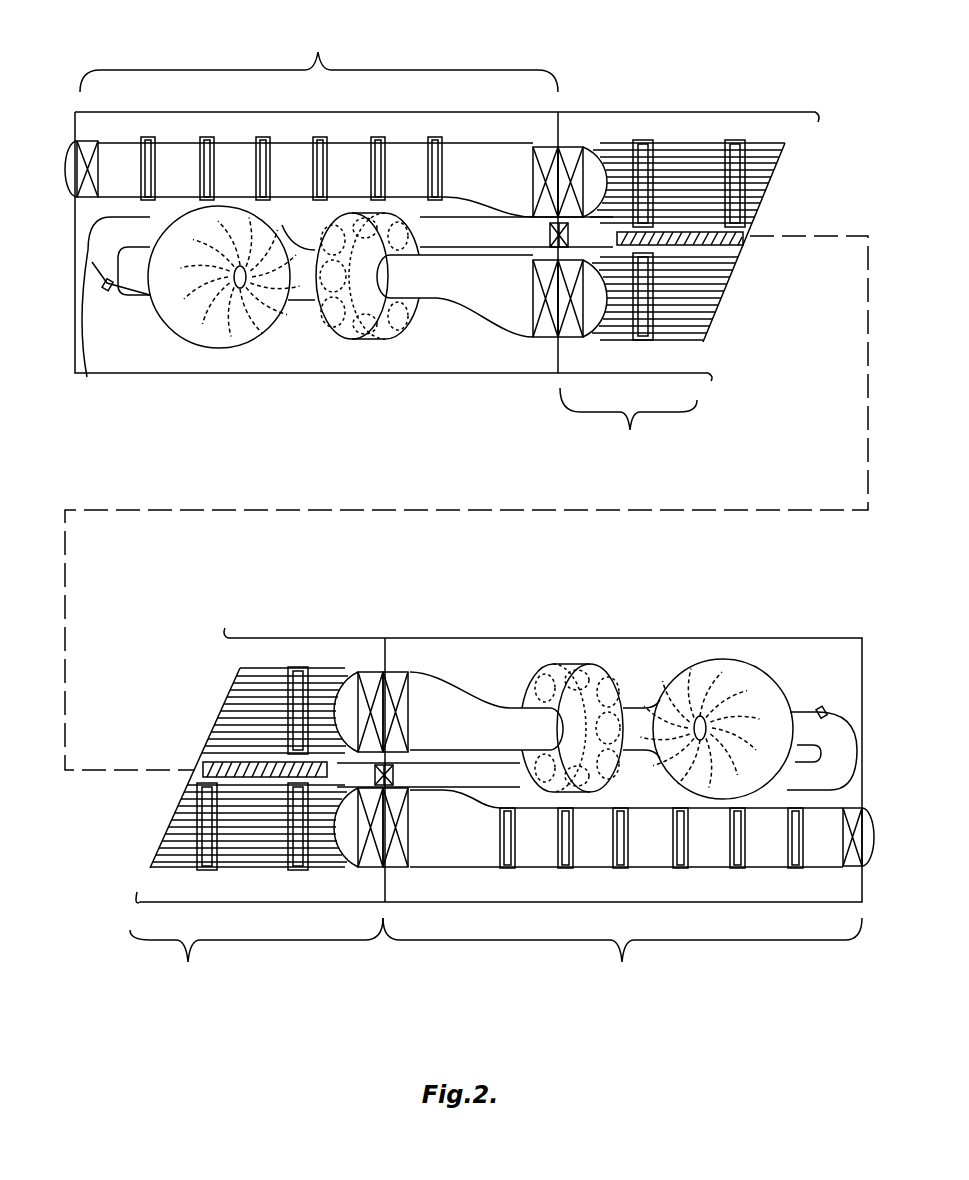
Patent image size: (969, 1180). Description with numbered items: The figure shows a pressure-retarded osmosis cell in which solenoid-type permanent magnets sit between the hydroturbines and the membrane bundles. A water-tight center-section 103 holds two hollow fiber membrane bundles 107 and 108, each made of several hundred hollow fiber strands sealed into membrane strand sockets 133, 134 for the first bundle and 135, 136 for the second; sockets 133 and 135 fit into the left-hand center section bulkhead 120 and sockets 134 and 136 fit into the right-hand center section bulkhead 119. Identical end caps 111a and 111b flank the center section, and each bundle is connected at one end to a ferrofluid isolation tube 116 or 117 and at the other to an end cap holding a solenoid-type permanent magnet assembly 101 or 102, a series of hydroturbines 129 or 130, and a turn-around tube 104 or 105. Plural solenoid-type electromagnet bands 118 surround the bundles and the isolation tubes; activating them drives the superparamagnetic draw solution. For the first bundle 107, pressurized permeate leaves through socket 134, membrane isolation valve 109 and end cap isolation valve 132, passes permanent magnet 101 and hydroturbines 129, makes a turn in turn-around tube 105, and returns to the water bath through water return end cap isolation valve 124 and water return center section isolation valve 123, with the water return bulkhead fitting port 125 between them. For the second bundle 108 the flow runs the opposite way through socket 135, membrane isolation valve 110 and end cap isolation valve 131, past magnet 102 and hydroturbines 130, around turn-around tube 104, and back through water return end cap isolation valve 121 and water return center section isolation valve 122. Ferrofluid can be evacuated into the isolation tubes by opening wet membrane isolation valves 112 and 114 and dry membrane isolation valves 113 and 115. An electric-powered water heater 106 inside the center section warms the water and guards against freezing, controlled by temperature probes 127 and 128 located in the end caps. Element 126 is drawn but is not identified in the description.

The solenoid-type permanent magnet assembly 101 is at (580, 673).
The solenoid-type permanent magnet assembly 102 is at (353, 338).
The water-tight center-section 103 is at (413, 691).
The turn-around tube 104 is at (88, 375).
The turn-around tube 105 is at (835, 723).
The electric-powered water heater 106 is at (662, 252).
The hollow fiber membrane bundle 107 is at (756, 150).
The hollow fiber membrane bundle 108 is at (245, 838).
The membrane isolation valve 109 is at (368, 682).
The membrane isolation valve 110 is at (570, 332).
The end cap 111a is at (319, 56).
The end cap 111b is at (622, 959).
The wet membrane isolation valve 112 is at (386, 858).
The dry membrane isolation valve 113 is at (415, 848).
The wet membrane isolation valve 114 is at (568, 157).
The dry membrane isolation valve 115 is at (543, 148).
The ferrofluid isolation tube 116 is at (652, 857).
The ferrofluid isolation tube 117 is at (287, 150).
The solenoid-type electromagnet bands 118 is at (325, 141).
The right-hand center section bulkhead 119 is at (388, 638).
The left-hand center section bulkhead 120 is at (560, 118).
The water return end cap isolation valve 121 is at (548, 234).
The water return center section isolation valve 122 is at (562, 228).
The water return center section isolation valve 123 is at (378, 772).
The water return end cap isolation valve 124 is at (395, 775).
The water return bulkhead fitting port 125 is at (385, 768).
The first transfer duct 126 is at (565, 230).
The temperature probe 127 is at (822, 707).
The temperature probe 128 is at (110, 297).
The series of hydroturbines 129 is at (707, 665).
The series of hydroturbines 130 is at (197, 345).
The end cap isolation valve 131 is at (540, 337).
The end cap isolation valve 132 is at (393, 683).
The membrane strand socket 133 is at (600, 166).
The membrane strand socket 134 is at (350, 680).
The membrane strand socket 135 is at (600, 325).
The membrane strand socket 136 is at (347, 850).